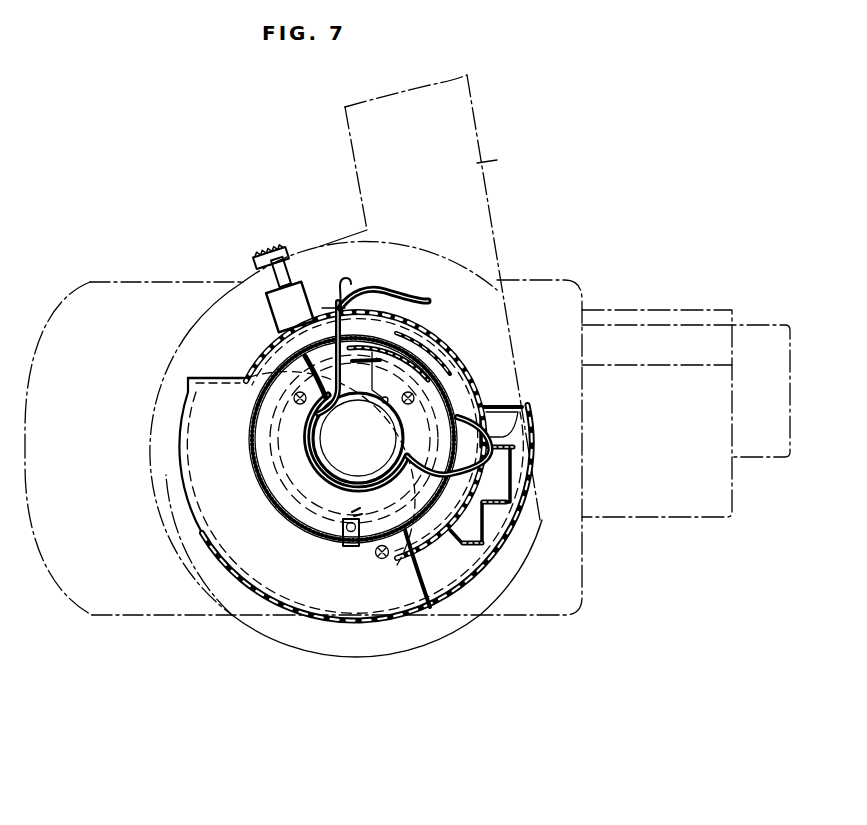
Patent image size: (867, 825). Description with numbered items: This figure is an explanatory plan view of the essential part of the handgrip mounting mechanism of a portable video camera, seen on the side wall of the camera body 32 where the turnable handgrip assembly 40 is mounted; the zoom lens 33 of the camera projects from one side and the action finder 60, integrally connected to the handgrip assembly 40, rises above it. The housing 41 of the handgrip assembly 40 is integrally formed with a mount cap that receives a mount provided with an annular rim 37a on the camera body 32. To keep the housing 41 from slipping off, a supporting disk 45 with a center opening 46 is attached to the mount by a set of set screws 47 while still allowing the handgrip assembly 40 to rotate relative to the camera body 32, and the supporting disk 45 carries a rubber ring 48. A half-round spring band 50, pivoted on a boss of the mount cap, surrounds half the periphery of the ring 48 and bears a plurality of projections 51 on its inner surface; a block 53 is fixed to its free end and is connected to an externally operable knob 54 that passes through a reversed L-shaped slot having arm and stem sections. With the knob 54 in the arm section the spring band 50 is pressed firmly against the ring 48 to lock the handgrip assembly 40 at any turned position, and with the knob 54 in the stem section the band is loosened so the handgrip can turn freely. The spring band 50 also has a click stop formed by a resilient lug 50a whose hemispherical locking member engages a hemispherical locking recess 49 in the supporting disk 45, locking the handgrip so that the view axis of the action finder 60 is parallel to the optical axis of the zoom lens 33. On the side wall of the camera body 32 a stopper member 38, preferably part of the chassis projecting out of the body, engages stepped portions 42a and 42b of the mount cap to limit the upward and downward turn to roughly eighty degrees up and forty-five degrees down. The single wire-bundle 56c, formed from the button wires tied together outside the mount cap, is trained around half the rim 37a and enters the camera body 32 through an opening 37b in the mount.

The camera body 32 is at (90, 282).
The zoom lens 33 is at (766, 323).
The annular rim 37a is at (327, 457).
The opening 37b is at (515, 440).
The stopper member 38 is at (497, 512).
The handgrip assembly 40 is at (455, 652).
The housing 41 is at (336, 656).
The stepped portion 42a is at (521, 412).
The stepped portion 42b is at (215, 392).
The supporting disk 45 is at (400, 362).
The center opening 46 is at (452, 382).
The set screws 47 is at (323, 423).
The ring 48 is at (455, 355).
The locking recess 49 is at (436, 505).
The spring band 50 is at (256, 465).
The resilient lug 50a is at (353, 548).
The projections 51 is at (270, 497).
The block 53 is at (298, 295).
The knob 54 is at (279, 250).
The single wire-bundle 56c is at (373, 308).
The action finder 60 is at (497, 160).